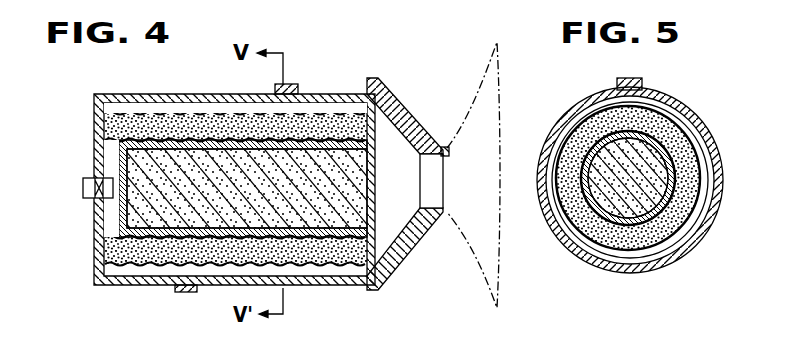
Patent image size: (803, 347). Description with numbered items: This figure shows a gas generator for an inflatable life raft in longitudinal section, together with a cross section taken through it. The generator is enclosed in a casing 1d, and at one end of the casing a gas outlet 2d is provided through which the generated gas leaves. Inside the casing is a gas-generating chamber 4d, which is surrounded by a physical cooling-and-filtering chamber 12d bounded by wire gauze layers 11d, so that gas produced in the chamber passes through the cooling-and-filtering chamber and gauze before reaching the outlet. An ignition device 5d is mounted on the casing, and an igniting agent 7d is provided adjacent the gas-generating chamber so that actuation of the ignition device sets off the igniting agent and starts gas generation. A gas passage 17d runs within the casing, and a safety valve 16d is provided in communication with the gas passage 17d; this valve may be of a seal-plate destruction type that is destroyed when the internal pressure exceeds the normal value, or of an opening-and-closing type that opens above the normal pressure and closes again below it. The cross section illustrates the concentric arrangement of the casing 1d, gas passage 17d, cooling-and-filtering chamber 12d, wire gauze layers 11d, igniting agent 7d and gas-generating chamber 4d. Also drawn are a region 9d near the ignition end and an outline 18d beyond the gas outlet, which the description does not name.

In FIG. 4, the casing 1d is at (173, 95).
In FIG. 5, the casing 1d is at (650, 272).
In FIG. 4, the gas outlet 2d is at (428, 186).
In FIG. 4, the gas-generating chamber 4d is at (322, 200).
In FIG. 5, the gas-generating chamber 4d is at (592, 150).
In FIG. 4, the ignition device 5d is at (83, 190).
In FIG. 4, the igniting agent 7d is at (143, 238).
In FIG. 5, the igniting agent 7d is at (585, 168).
In FIG. 4, the end gap 9d is at (103, 213).
In FIG. 4, the wire gauze layers 11d is at (149, 240).
In FIG. 5, the wire gauze layers 11d is at (697, 245).
In FIG. 4, the physical cooling-and-filtering chamber 12d is at (137, 138).
In FIG. 5, the physical cooling-and-filtering chamber 12d is at (690, 163).
In FIG. 4, the safety valve 16d is at (290, 87).
In FIG. 5, the safety valve 16d is at (641, 82).
In FIG. 4, the gas passage 17d is at (114, 108).
In FIG. 5, the gas passage 17d is at (683, 133).
In FIG. 4, the exhaust plume outline 18d is at (471, 87).